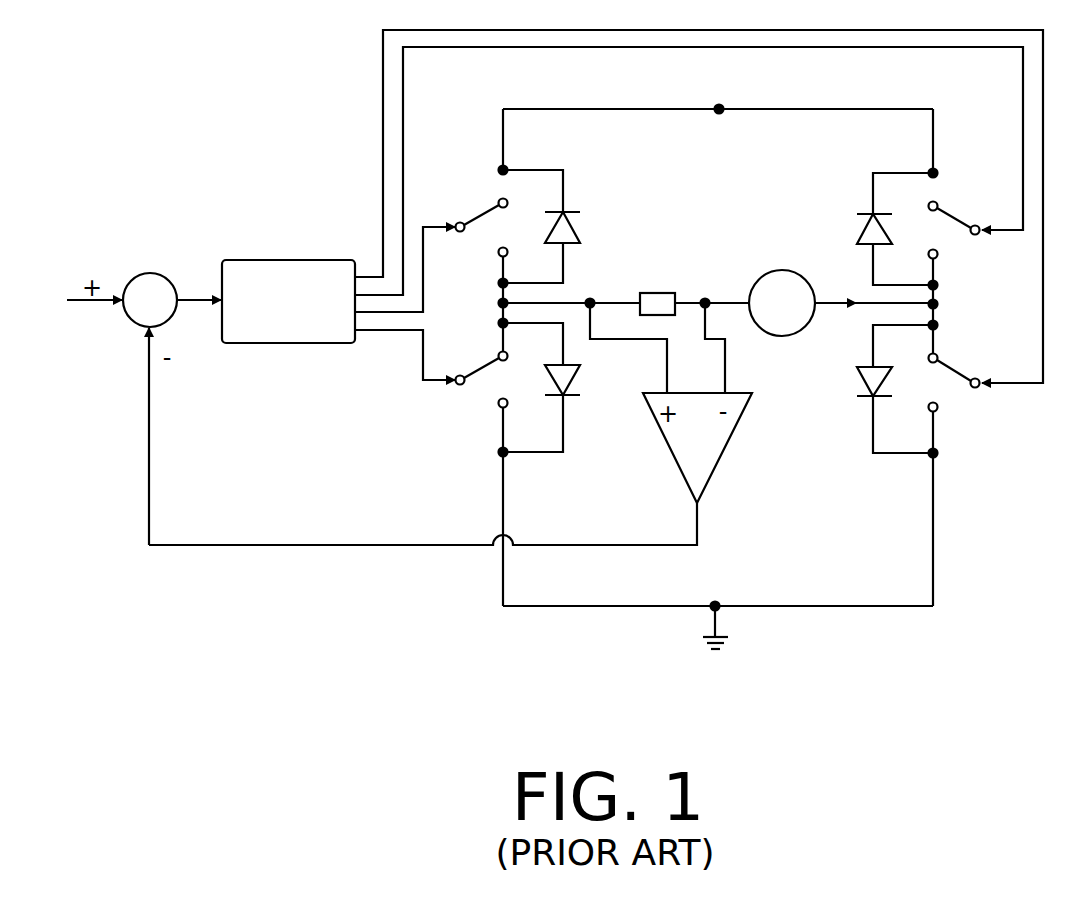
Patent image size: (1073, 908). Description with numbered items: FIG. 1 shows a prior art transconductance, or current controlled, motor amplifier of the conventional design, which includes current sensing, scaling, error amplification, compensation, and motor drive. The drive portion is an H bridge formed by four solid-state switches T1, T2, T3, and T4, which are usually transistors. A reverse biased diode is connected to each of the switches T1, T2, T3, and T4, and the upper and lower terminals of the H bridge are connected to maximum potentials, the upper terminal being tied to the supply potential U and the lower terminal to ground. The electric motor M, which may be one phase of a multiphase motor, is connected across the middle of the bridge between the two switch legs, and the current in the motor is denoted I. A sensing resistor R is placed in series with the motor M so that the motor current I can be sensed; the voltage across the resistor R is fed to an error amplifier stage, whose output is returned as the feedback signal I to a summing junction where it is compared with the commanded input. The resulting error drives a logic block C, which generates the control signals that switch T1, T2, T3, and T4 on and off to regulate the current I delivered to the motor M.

The logic control circuit C is at (287, 260).
The solid-state switch T1 is at (512, 198).
The solid-state switch T2 is at (512, 370).
The solid-state switch T3 is at (925, 371).
The solid-state switch T4 is at (925, 199).
The current sensing resistor R is at (626, 285).
The electric motor M is at (782, 303).
The supply voltage U is at (719, 109).
The motor current I is at (541, 424).